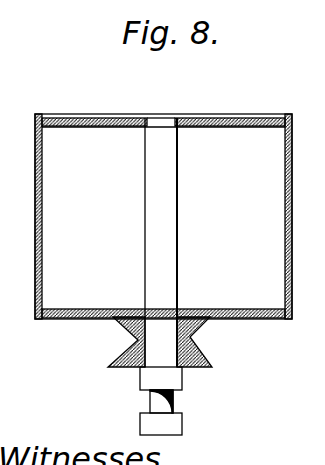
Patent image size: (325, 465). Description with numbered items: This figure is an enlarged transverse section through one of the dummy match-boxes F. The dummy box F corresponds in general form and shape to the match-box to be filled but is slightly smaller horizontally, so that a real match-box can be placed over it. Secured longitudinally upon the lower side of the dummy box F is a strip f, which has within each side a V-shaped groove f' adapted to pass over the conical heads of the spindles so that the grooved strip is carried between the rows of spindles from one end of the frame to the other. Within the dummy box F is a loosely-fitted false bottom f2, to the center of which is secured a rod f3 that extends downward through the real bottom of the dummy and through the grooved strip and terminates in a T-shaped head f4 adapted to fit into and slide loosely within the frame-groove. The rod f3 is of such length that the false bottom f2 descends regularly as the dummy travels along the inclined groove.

The dummy match-box F is at (68, 318).
The V-shaped groove f' is at (120, 342).
The strip f is at (204, 342).
The false bottom f2 is at (234, 117).
The rod f3 is at (172, 221).
The T-shaped head f4 is at (151, 401).